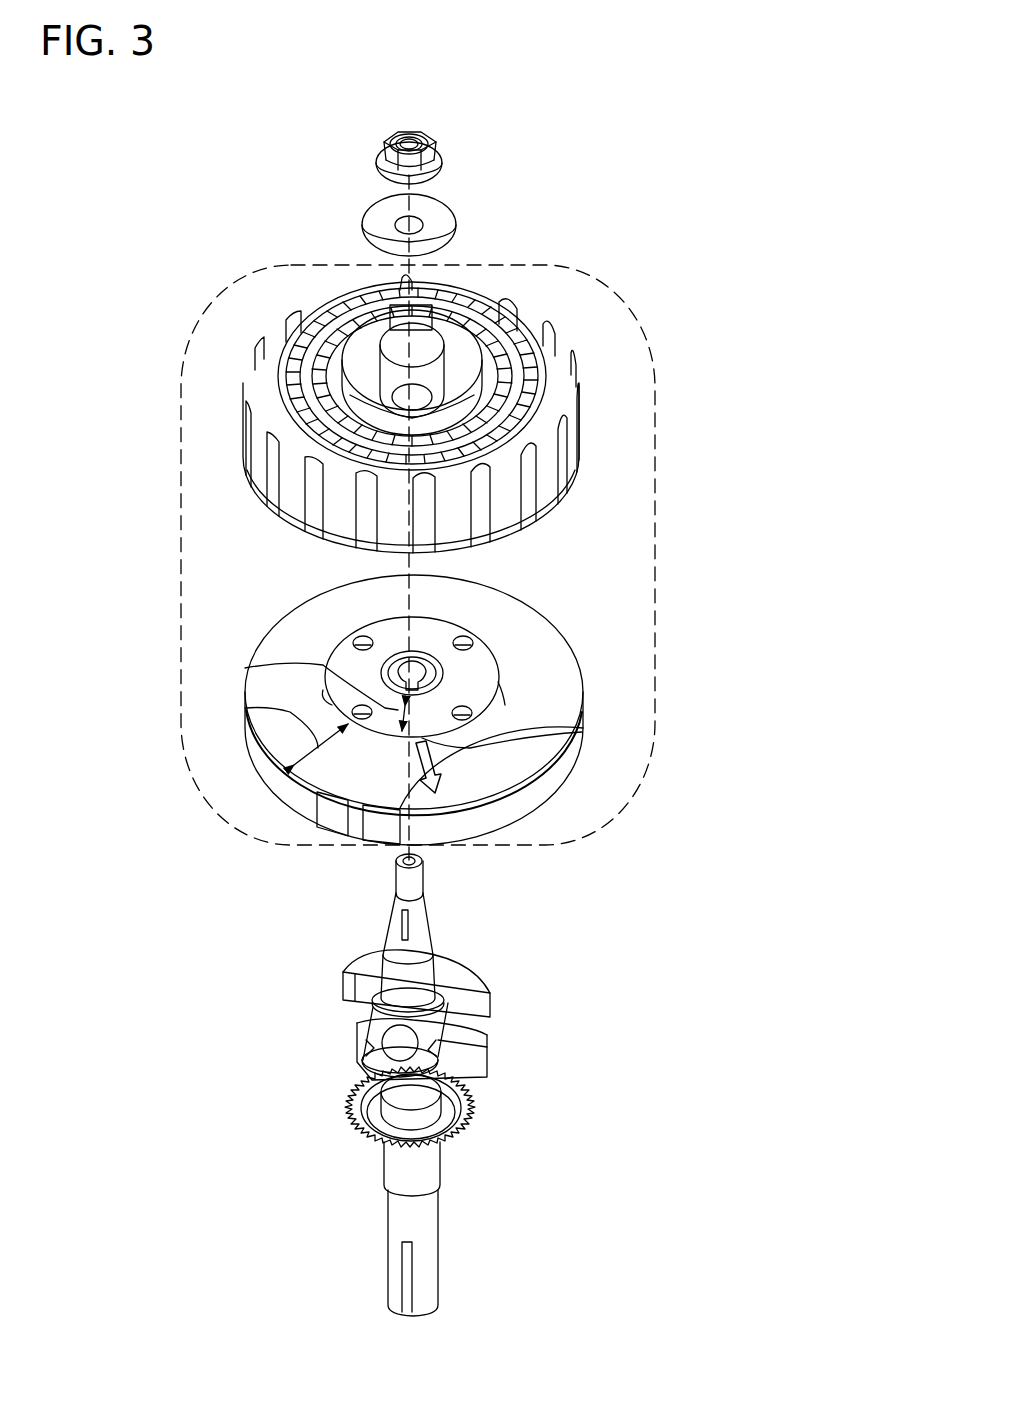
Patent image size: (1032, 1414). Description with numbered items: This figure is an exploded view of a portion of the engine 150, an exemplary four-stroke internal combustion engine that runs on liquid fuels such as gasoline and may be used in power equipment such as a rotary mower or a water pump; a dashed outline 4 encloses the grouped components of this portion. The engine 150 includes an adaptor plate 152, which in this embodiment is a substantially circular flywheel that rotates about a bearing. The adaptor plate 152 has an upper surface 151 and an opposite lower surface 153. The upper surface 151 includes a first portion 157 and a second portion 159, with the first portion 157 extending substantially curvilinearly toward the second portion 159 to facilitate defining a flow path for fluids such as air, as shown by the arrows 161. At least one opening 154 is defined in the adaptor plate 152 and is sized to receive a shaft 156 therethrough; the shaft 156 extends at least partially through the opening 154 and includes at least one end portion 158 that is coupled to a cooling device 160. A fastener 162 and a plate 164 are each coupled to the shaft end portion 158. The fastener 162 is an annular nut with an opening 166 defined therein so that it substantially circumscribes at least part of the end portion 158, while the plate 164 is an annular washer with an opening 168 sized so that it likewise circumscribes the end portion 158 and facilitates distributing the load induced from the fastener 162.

The engine 150 is at (575, 88).
The engine 4 is at (634, 322).
The fastener 162 is at (448, 135).
The opening 166 is at (408, 133).
The plate 164 is at (465, 215).
The opening 168 is at (395, 225).
The cooling device 160 is at (512, 300).
The adaptor plate 152 is at (250, 643).
The upper surface 151 is at (573, 685).
The opening 154 is at (430, 670).
The second portion 159 is at (245, 668).
The first portion 157 is at (245, 708).
The arrows 161 is at (582, 733).
The lower surface 153 is at (553, 775).
The shaft 156 is at (515, 992).
The end portion 158 is at (390, 875).